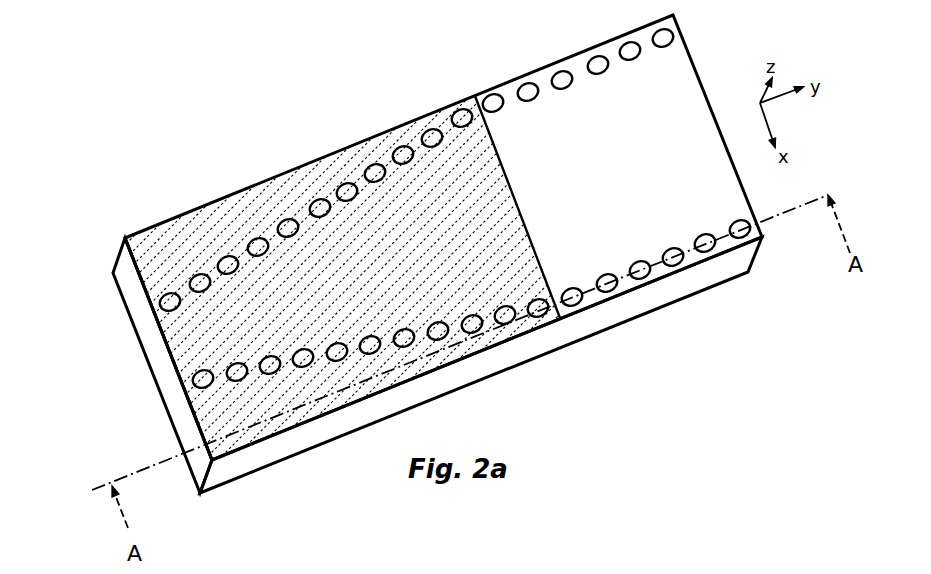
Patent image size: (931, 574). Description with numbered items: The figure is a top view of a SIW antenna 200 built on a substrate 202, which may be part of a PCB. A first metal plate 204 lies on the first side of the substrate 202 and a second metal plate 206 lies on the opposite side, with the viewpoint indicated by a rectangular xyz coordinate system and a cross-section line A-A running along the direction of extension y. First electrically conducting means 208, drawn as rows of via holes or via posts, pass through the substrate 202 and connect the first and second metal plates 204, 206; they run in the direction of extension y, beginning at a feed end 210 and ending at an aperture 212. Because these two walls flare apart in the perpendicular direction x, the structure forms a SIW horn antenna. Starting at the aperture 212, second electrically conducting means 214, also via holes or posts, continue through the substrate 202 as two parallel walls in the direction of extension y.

The SIW antenna 200 is at (392, 294).
The substrate 202 is at (122, 290).
The first metal plate 204 is at (198, 218).
The second metal plate 206 is at (275, 464).
The first electrically conducting means 208 is at (375, 170).
The feed end 210 is at (163, 349).
The aperture 212 is at (524, 206).
The second electrically conducting means 214 is at (490, 97).